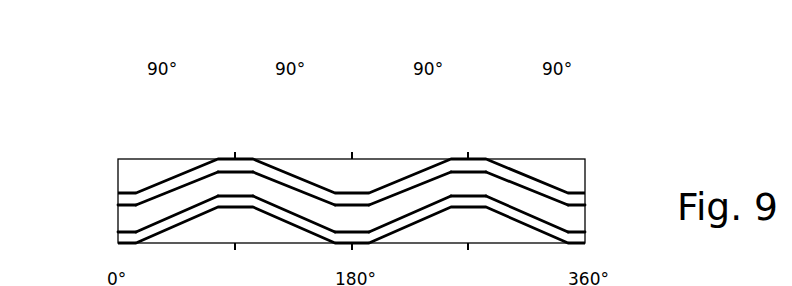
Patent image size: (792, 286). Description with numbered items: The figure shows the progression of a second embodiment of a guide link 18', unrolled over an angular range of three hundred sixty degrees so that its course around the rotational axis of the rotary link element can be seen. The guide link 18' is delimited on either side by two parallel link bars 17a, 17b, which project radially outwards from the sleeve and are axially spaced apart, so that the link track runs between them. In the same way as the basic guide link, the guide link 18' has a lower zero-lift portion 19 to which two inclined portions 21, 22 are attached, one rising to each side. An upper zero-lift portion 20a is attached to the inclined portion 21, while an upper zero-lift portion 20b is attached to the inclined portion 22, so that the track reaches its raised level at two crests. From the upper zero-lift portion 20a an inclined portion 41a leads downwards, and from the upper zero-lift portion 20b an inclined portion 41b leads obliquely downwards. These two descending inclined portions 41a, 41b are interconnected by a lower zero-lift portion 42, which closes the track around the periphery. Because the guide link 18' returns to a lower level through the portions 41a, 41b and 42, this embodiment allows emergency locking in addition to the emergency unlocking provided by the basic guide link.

The link bar 17a is at (583, 195).
The link bar 17b is at (585, 238).
The guide link 18' is at (422, 140).
The lower zero-lift portion 19 is at (347, 220).
The upper zero-lift portion 20a is at (235, 183).
The upper zero-lift portion 20b is at (467, 182).
The inclined portion 21 is at (282, 193).
The inclined portion 22 is at (408, 202).
The inclined portion 41a is at (171, 200).
The inclined portion 41b is at (525, 202).
The lower zero-lift portion 42 is at (603, 212).